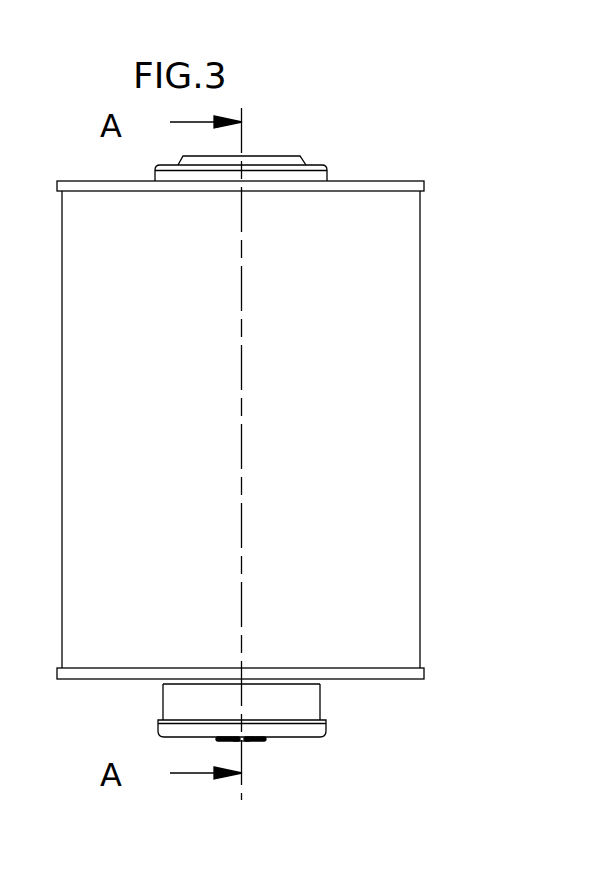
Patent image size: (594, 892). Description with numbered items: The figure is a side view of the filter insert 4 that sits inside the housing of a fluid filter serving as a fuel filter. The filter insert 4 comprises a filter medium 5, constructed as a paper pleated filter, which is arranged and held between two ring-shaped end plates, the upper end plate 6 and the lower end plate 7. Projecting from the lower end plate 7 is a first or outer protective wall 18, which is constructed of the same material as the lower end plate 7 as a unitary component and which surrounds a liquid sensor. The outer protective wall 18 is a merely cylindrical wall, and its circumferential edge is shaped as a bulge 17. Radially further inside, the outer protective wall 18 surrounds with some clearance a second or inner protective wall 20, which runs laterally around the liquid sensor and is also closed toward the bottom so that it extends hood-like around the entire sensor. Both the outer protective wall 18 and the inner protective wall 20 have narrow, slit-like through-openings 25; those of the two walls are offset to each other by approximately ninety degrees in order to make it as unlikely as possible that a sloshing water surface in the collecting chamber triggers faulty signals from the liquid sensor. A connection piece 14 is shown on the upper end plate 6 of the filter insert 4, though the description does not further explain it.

The filter insert 4 is at (272, 415).
The filter medium 5 is at (394, 368).
The end plate 6 is at (372, 185).
The lower end plate 7 is at (405, 673).
The upper cap / connection piece 14 is at (323, 172).
The bulge 17 is at (302, 728).
The outer protective wall 18 is at (307, 692).
The inner protective wall 20 is at (255, 739).
The through-openings 25 is at (247, 752).